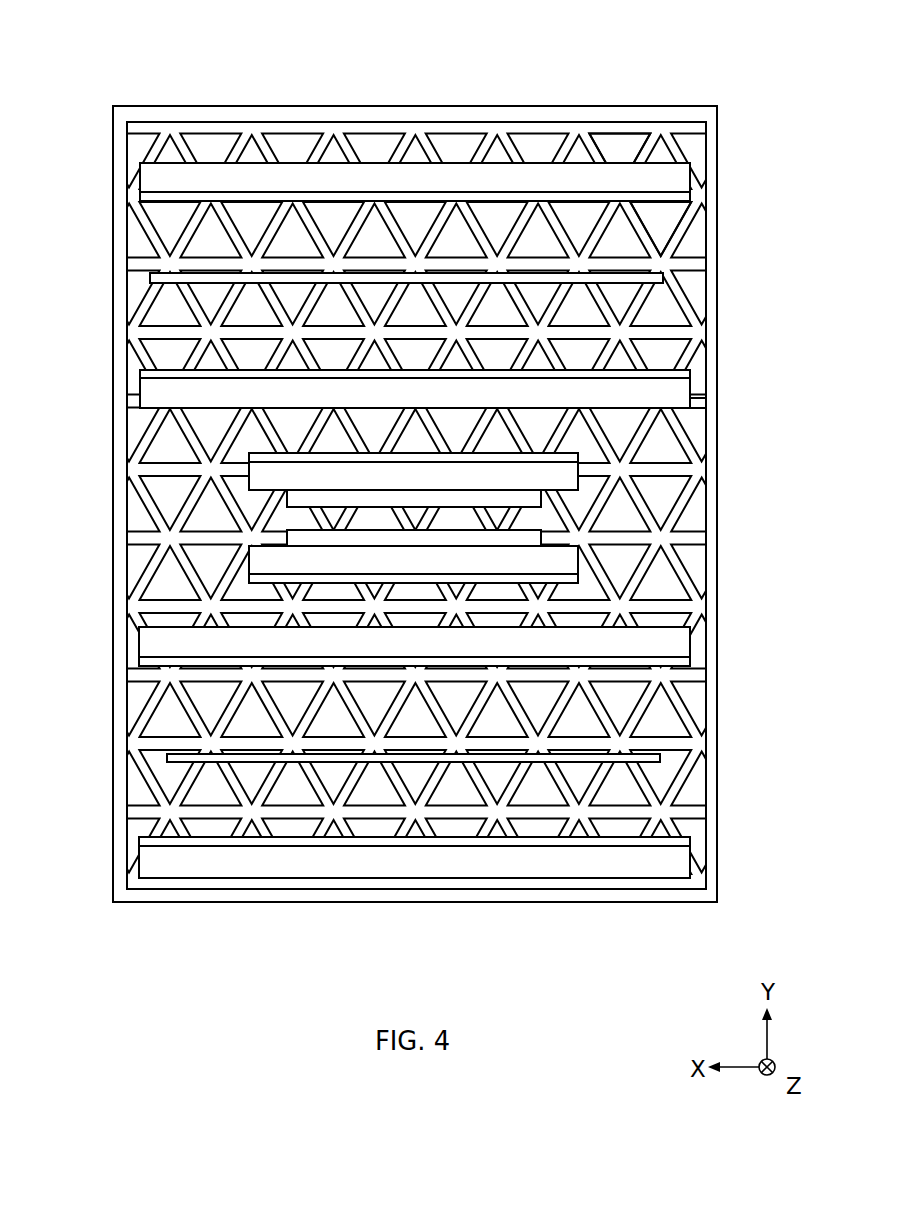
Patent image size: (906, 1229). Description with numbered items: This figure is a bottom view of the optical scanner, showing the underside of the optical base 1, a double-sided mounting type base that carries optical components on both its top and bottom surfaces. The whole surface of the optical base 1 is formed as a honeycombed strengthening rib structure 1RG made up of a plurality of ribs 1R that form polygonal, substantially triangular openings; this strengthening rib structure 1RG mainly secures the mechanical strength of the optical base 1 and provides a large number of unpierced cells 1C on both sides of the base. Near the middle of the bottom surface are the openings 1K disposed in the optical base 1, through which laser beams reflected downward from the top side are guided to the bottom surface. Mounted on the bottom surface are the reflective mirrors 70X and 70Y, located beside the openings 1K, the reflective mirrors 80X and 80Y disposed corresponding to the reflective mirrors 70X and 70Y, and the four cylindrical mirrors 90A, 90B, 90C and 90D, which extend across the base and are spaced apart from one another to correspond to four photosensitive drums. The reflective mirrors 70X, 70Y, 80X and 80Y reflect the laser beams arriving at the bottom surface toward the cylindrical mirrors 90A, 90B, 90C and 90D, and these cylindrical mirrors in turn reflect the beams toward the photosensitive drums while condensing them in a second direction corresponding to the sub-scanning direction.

The optical base 1 is at (228, 108).
The ribs 1R is at (455, 267).
The unpierced cells 1C is at (623, 147).
The strengthening rib structure 1RG is at (686, 237).
The openings 1K is at (548, 538).
The cylindrical mirror 90A is at (148, 192).
The cylindrical mirror 90B is at (148, 395).
The cylindrical mirror 90C is at (142, 655).
The cylindrical mirror 90D is at (152, 863).
The reflective mirror 80Y is at (163, 282).
The reflective mirror 80X is at (167, 760).
The reflective mirror 70Y is at (258, 480).
The reflective mirror 70X is at (258, 565).